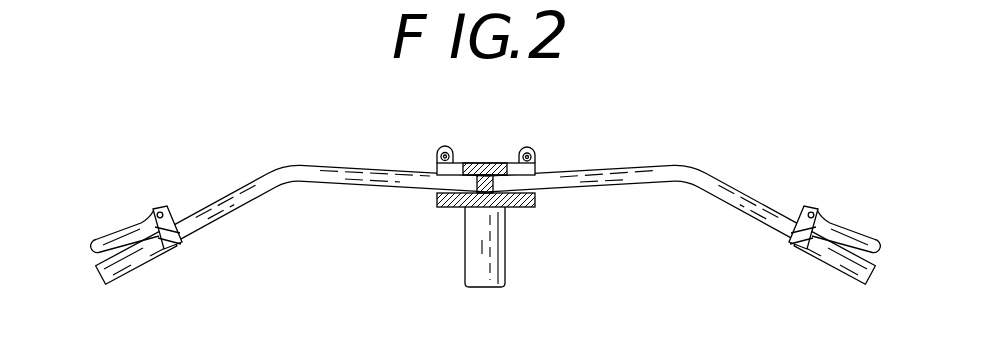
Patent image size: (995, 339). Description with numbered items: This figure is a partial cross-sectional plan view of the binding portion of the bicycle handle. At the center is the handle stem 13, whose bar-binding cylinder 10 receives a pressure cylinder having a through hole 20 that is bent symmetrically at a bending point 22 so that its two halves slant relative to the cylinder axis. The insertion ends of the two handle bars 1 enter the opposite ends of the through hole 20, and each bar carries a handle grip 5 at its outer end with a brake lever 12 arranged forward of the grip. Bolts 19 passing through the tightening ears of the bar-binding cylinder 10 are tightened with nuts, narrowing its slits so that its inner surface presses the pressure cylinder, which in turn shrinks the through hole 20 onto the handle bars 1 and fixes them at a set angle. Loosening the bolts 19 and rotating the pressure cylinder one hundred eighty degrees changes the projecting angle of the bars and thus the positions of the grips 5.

The handle bar 1 is at (350, 181).
The handle grip 5 is at (143, 254).
The bar-binding cylinder 10 is at (520, 205).
The brake lever 12 is at (118, 235).
The handle stem 13 is at (510, 176).
The bolt 19 is at (525, 147).
The through hole 20 is at (465, 199).
The bending point 22 is at (494, 190).